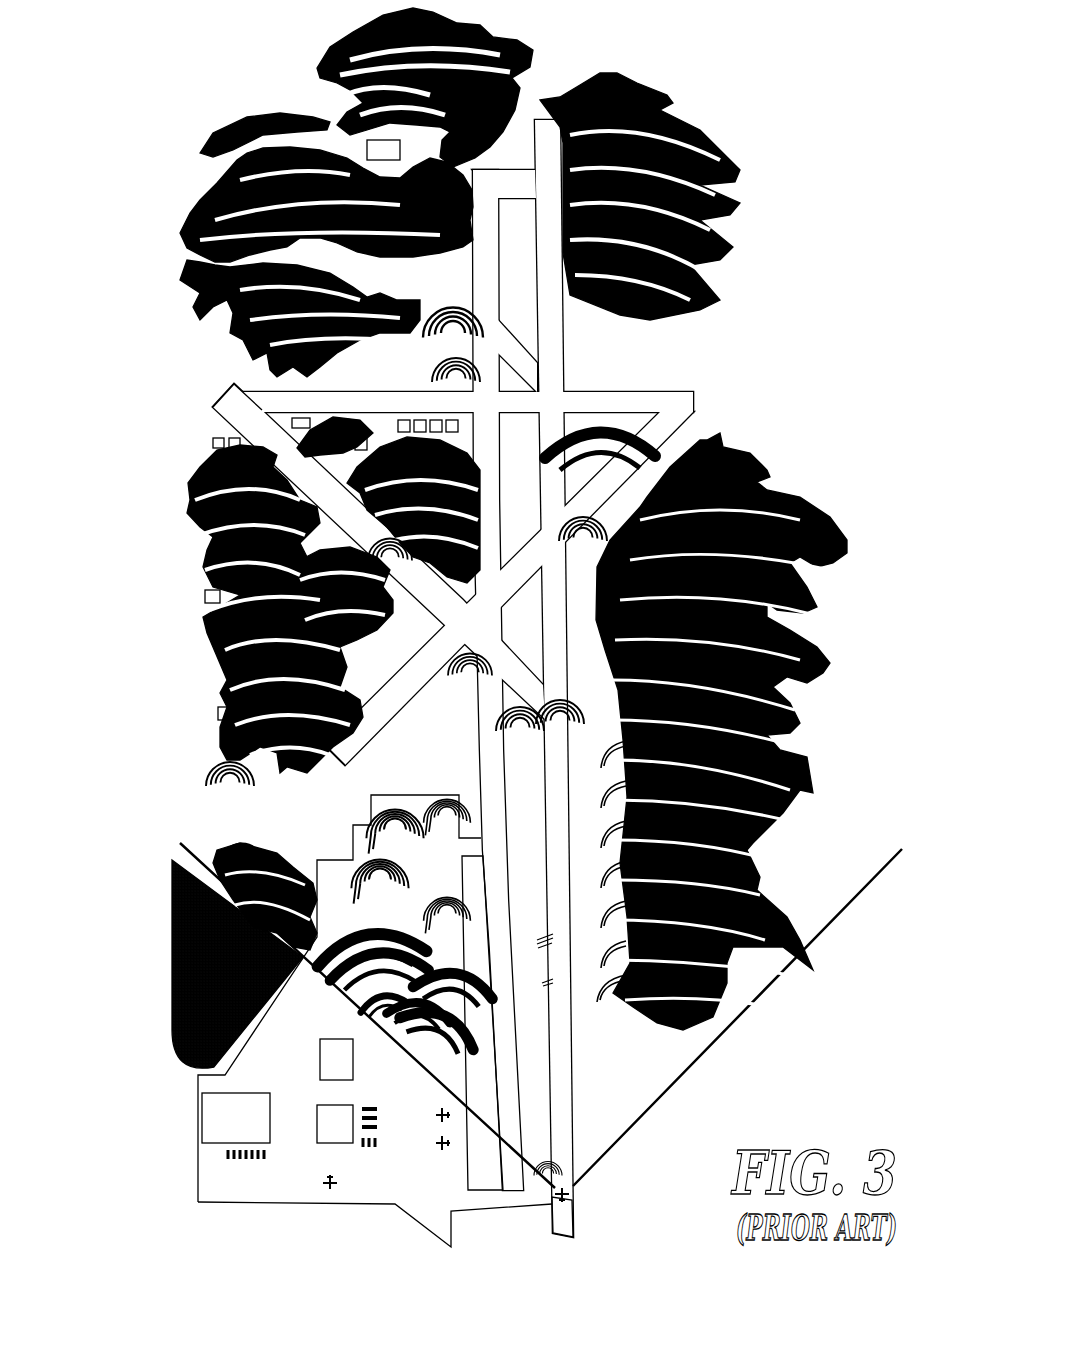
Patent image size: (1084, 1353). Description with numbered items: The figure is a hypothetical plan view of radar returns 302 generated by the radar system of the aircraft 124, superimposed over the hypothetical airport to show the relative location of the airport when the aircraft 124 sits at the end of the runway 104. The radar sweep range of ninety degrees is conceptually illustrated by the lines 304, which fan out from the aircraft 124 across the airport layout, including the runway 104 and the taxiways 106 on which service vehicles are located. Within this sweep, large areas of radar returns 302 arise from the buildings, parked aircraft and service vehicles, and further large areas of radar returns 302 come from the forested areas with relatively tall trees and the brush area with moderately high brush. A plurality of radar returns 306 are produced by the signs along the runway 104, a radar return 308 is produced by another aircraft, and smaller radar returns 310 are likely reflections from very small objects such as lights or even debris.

The runway 104 is at (562, 1236).
The taxiways 106 is at (212, 404).
The aircraft 124 is at (594, 1205).
The radar returns 302 is at (300, 57).
The lines 304 is at (178, 844).
The radar returns 306 is at (592, 405).
The radar return 308 is at (577, 740).
The smaller radar returns 310 is at (575, 990).